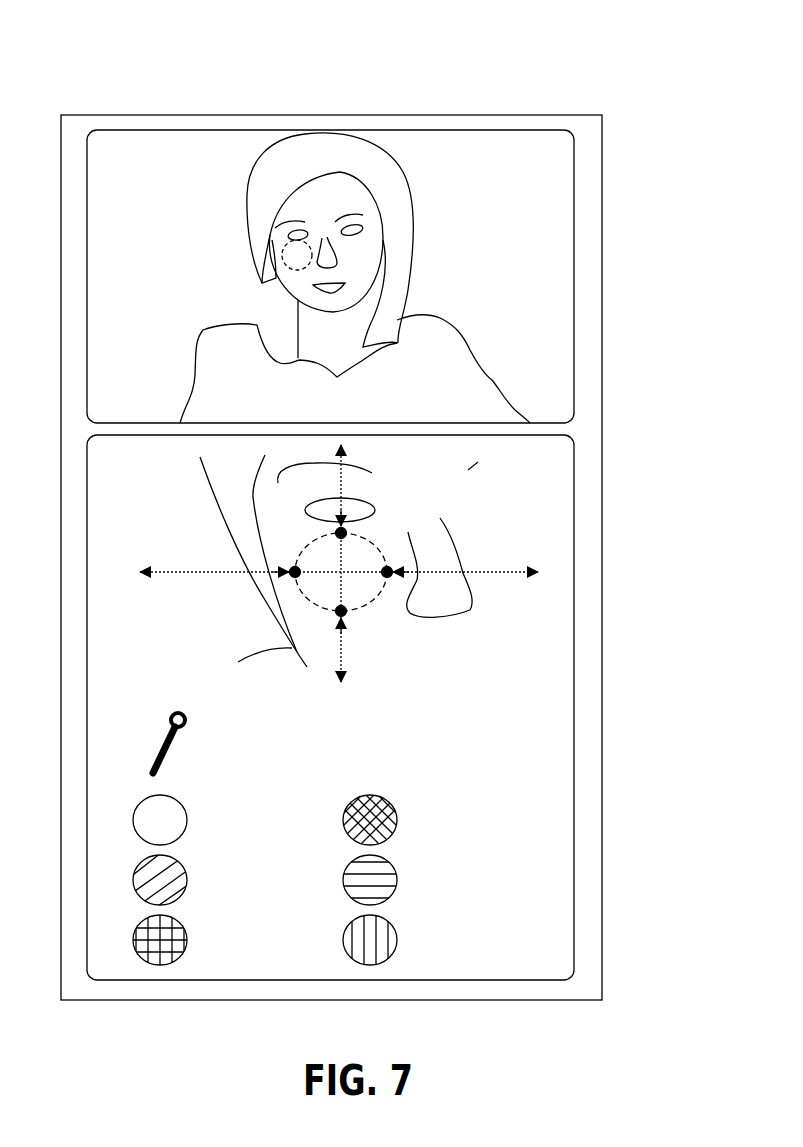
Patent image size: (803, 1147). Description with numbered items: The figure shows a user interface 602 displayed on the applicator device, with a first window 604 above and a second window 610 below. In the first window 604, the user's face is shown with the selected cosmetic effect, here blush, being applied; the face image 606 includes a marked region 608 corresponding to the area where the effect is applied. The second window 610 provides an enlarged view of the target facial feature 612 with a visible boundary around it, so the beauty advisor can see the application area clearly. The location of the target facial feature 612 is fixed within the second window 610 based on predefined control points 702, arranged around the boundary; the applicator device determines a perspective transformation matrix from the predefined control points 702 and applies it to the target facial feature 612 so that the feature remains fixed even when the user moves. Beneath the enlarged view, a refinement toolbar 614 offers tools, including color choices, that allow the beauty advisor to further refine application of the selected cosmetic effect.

The user interface 602 is at (624, 86).
The first window 604 is at (330, 276).
The user face image 606 is at (418, 210).
The selected facial region indicator 608 is at (283, 256).
The second window 610 is at (400, 707).
The target facial feature 612 is at (312, 541).
The predefined control points 702 is at (345, 537).
The refinement toolbar 614 is at (540, 793).